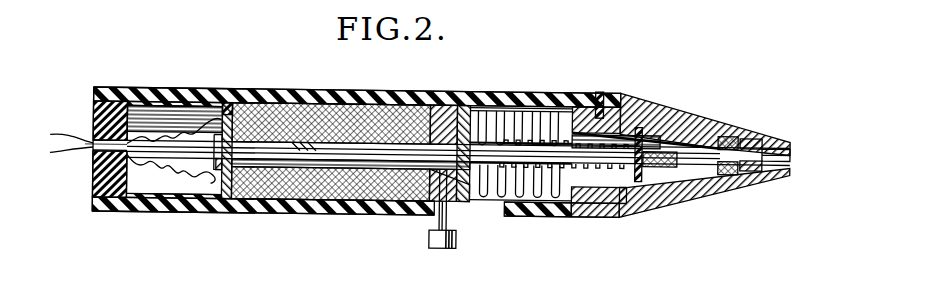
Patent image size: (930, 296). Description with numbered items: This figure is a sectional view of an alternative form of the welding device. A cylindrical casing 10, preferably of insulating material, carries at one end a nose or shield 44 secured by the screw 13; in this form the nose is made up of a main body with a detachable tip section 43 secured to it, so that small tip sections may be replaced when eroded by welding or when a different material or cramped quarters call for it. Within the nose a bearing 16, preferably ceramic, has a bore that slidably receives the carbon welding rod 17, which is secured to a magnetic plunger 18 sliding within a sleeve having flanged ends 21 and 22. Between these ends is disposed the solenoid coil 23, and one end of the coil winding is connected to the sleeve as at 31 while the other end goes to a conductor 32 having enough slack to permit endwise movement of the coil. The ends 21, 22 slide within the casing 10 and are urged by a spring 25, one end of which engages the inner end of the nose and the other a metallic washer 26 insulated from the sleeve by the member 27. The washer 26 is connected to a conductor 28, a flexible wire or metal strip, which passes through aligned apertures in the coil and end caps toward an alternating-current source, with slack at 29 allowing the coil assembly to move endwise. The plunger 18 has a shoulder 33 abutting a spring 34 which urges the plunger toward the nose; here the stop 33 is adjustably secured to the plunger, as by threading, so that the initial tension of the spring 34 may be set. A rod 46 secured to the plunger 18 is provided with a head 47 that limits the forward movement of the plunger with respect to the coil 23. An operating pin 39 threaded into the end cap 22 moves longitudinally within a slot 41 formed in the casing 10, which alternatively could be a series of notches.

The cylindrical casing 10 is at (300, 88).
The screw 13 is at (599, 90).
The bearing 16 is at (733, 128).
The carbon welding rod 17 is at (752, 145).
The magnetic plunger 18 is at (542, 147).
The flanged end 21 is at (233, 96).
The flanged end 22 is at (446, 94).
The solenoid coil 23 is at (326, 208).
The spring 25 is at (493, 98).
The metallic washer 26 is at (466, 210).
The insulating member 27 is at (458, 98).
The conductor 28 is at (55, 152).
The slack 29 is at (165, 175).
The coil winding connection to sleeve 31 is at (282, 96).
The conductor 32 is at (180, 95).
The shoulder 33 is at (638, 125).
The spring 34 is at (626, 208).
The operating pin 39 is at (438, 244).
The slot 41 is at (500, 206).
The detachable tip section 43 is at (762, 175).
The nose or shield 44 is at (688, 190).
The rod 46 is at (244, 208).
The head 47 is at (213, 170).